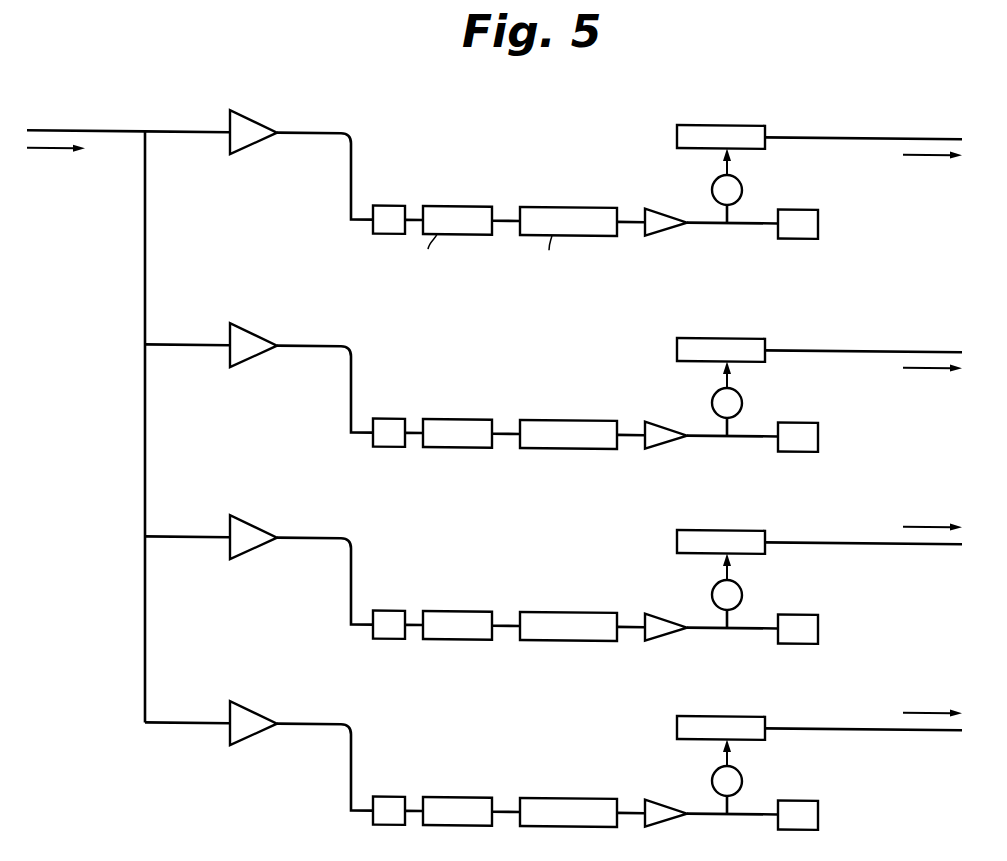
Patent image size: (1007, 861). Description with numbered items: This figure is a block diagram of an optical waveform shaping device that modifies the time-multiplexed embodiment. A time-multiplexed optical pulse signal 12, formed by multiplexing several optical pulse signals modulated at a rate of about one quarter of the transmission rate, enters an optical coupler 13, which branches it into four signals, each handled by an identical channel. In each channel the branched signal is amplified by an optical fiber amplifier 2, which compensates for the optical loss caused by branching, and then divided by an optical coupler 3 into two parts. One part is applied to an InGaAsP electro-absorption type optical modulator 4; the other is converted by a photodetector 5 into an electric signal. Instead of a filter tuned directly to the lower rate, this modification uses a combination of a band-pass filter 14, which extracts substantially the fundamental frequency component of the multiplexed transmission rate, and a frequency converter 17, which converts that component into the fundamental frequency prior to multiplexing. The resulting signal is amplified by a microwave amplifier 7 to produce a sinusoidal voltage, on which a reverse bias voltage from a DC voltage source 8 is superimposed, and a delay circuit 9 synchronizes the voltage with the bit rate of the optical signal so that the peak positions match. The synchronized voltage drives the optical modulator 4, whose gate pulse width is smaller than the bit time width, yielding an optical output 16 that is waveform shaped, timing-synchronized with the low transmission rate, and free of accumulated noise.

The optical fiber amplifier 2 is at (261, 108).
The optical coupler 3 is at (325, 459).
The InGaAsP electro-absorption type optical modulator 4 is at (723, 118).
The photodetector 5 is at (386, 202).
The microwave amplifier 7 is at (657, 202).
The DC voltage source 8 is at (799, 202).
The delay circuit 9 is at (713, 179).
The optical pulse signal 12 is at (86, 127).
The optical coupler 13 is at (137, 413).
The band-pass filter 14 is at (450, 202).
The optical output 16 is at (863, 418).
The frequency converter 17 is at (537, 202).